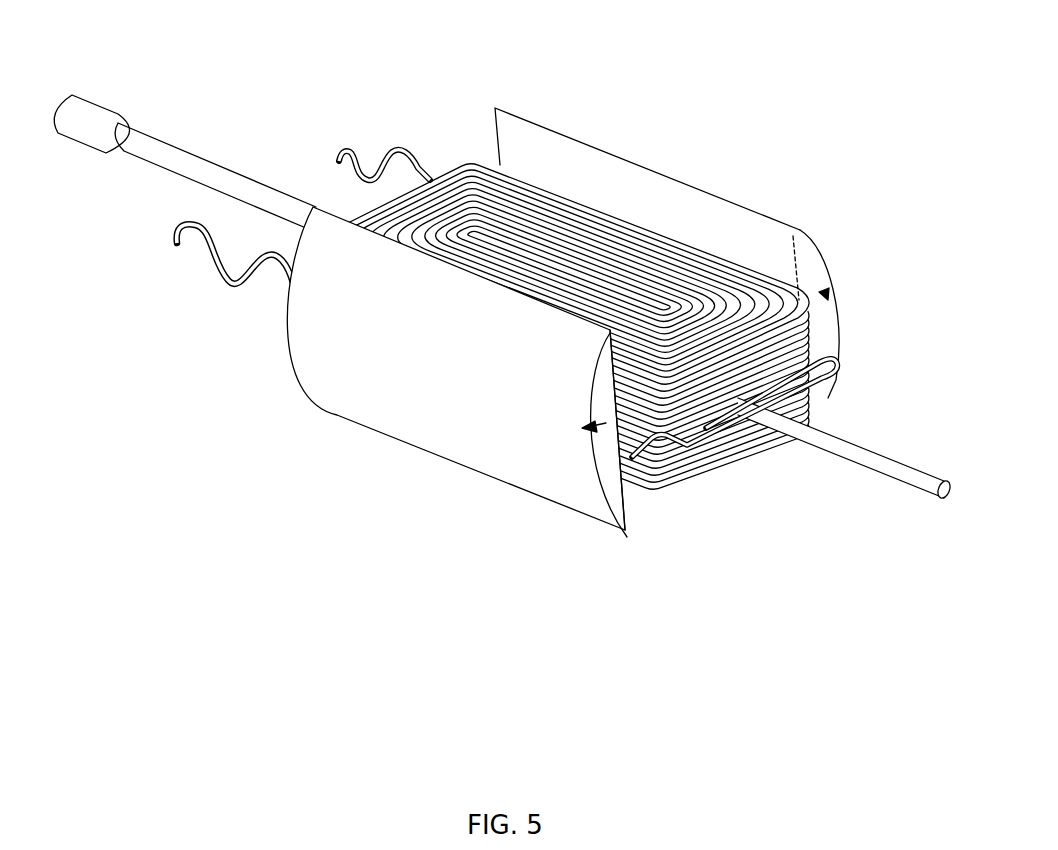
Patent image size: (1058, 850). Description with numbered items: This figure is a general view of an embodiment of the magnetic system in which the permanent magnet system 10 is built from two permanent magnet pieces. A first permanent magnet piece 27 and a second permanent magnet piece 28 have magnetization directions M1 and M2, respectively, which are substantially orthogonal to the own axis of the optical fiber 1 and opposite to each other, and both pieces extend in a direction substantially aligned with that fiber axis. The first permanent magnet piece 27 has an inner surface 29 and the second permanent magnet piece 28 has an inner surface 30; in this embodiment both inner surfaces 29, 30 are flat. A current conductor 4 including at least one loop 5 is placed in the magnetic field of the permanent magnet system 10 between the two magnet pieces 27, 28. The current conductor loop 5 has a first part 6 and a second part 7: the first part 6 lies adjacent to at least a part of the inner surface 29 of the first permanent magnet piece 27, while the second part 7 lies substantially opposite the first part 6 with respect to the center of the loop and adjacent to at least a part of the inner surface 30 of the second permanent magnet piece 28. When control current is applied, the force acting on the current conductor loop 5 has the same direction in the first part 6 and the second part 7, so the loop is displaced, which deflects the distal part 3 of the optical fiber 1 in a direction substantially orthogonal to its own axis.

The optical fiber 1 is at (268, 200).
The distal part of the optical fiber 3 is at (930, 468).
The current conductor 4 is at (440, 172).
The current conductor loop 5 is at (252, 148).
The first part of the current conductor loop 6 is at (667, 490).
The second part of the current conductor loop 7 is at (502, 212).
The permanent magnet system 10 is at (514, 350).
The first permanent magnet piece 27 is at (400, 383).
The second permanent magnet piece 28 is at (558, 140).
The inner surface of the first permanent magnet piece 29 is at (623, 497).
The inner surface of the second permanent magnet piece 30 is at (595, 190).
The magnetization direction of the first permanent magnet piece M1 is at (606, 423).
The magnetization direction of the second permanent magnet piece M2 is at (824, 291).